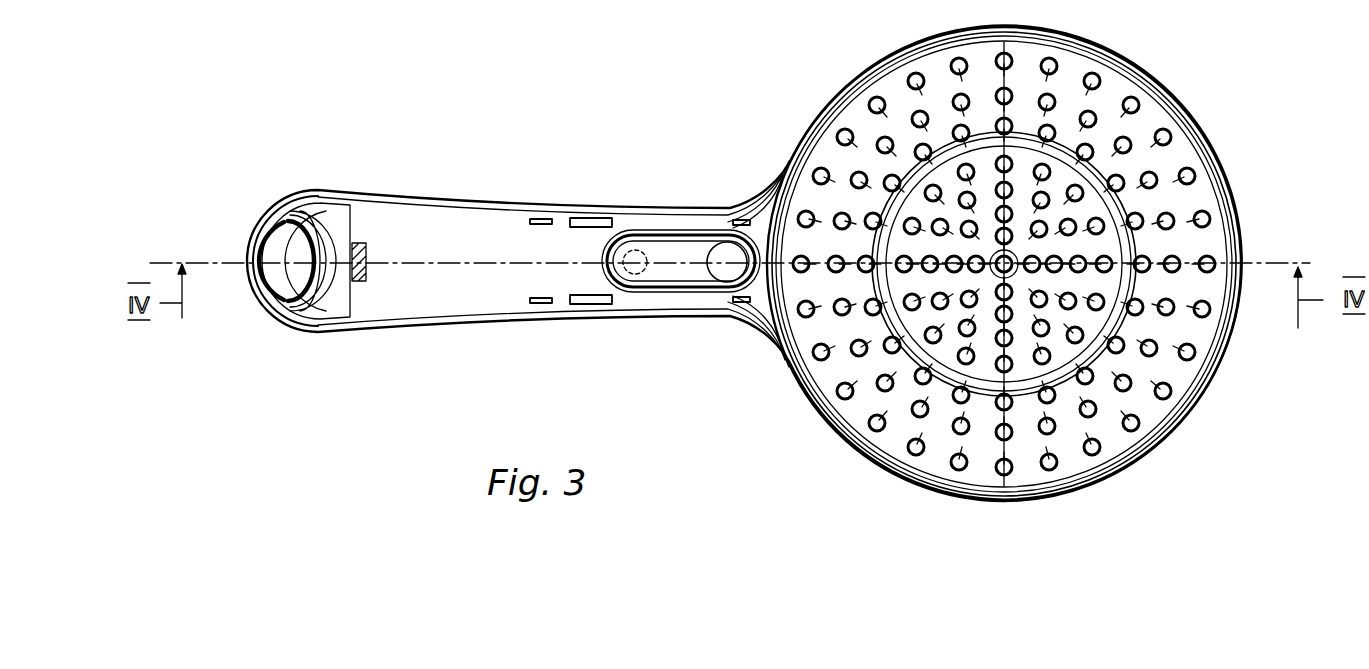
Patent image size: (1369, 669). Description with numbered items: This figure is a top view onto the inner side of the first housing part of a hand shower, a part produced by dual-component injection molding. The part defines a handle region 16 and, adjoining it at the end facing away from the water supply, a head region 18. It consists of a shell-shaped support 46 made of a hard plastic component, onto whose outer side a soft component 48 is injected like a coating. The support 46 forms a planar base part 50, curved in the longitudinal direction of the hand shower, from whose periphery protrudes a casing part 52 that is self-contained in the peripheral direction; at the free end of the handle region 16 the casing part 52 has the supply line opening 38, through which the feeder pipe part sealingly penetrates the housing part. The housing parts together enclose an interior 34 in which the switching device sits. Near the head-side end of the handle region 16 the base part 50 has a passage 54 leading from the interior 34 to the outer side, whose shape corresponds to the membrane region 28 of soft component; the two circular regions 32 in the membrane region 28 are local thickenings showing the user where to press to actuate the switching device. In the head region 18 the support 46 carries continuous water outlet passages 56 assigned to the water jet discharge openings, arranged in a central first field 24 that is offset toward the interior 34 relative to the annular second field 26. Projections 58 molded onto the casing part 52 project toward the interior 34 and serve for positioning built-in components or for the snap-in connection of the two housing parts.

The handle region 16 is at (577, 200).
The head region 18 is at (890, 255).
The central first field 24 is at (1090, 322).
The annular second field 26 is at (1200, 242).
The membrane region 28 is at (677, 275).
The circular regions 32 is at (627, 325).
The interior 34 is at (490, 253).
The supply line opening 38 is at (290, 280).
The support 46 is at (392, 235).
The soft component 48 is at (498, 203).
The base part 50 is at (422, 290).
The casing part 52 is at (440, 210).
The passage 54 is at (647, 233).
The water outlet passages 56 is at (1217, 213).
The projections 58 is at (575, 305).